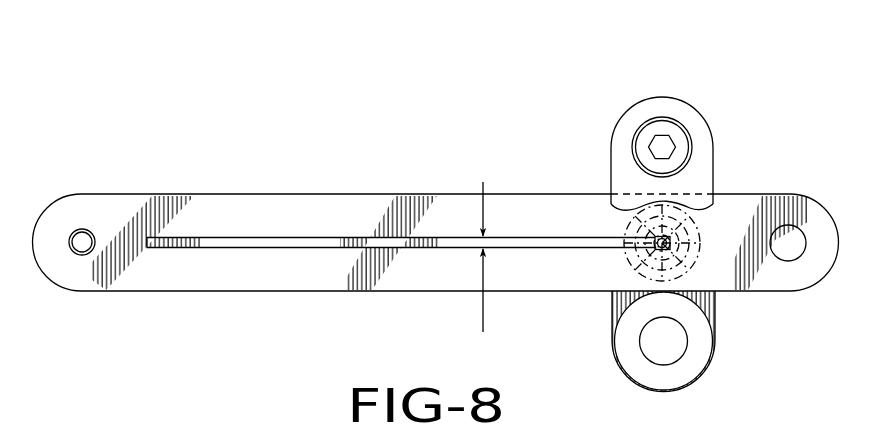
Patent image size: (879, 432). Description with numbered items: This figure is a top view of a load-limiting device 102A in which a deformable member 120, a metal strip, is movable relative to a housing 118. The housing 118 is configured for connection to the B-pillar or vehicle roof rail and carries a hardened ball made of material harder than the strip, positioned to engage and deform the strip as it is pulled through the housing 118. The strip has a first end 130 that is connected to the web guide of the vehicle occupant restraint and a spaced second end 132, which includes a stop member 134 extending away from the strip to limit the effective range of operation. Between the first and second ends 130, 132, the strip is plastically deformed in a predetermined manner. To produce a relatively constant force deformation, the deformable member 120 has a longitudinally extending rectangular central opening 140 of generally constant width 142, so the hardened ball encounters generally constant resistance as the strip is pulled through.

The load-limiting device 102A is at (270, 120).
The housing 118 is at (609, 139).
The deformable member 120 is at (364, 192).
The first end 130 is at (801, 294).
The second end 132 is at (59, 291).
The stop member 134 is at (80, 229).
The central opening 140 is at (215, 249).
The width 142 is at (483, 332).